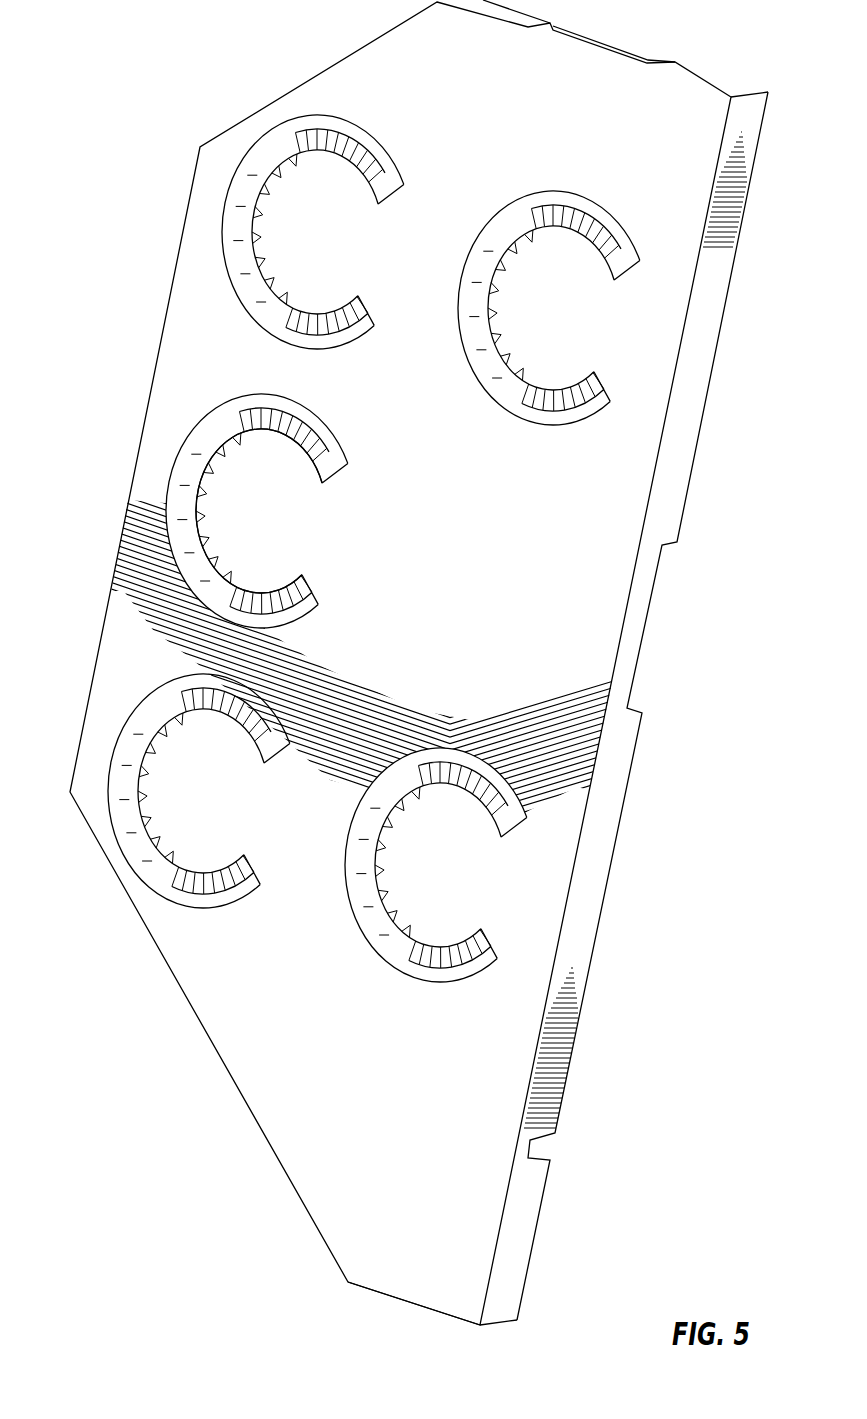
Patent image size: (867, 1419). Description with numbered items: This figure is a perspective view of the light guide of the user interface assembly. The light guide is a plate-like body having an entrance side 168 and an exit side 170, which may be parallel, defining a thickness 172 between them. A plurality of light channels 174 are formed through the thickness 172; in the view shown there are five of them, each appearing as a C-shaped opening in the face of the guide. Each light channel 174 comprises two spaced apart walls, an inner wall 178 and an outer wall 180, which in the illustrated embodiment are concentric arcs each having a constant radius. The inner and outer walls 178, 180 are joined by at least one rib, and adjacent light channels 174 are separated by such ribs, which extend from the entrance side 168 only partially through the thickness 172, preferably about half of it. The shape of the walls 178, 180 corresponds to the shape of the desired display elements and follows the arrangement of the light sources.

The entrance side 168 is at (537, 1233).
The exit side 170 is at (400, 1268).
The thickness 172 is at (503, 1325).
The light channels 174 is at (239, 369).
The inner wall 178 is at (200, 535).
The outer wall 180 is at (163, 678).